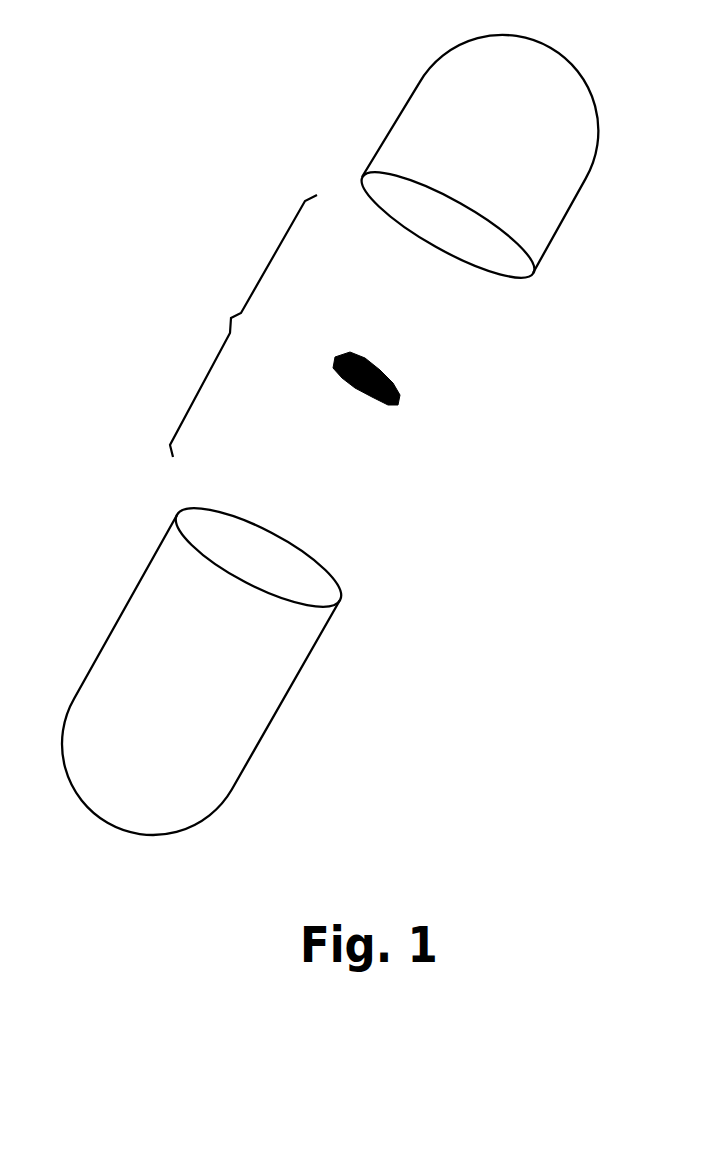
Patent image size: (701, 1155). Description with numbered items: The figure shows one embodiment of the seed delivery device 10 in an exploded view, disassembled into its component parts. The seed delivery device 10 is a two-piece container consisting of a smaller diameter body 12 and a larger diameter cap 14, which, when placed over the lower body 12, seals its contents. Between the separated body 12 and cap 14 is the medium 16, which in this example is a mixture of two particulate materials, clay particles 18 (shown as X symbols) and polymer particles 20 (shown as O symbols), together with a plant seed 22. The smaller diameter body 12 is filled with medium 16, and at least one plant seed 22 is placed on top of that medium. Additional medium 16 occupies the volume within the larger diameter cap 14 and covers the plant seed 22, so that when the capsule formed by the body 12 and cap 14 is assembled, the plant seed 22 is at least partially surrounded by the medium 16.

The seed delivery device 10 is at (137, 159).
The smaller diameter body 12 is at (198, 710).
The larger diameter cap 14 is at (460, 120).
The medium 16 is at (228, 322).
The clay particles 18 is at (500, 332).
The polymer particles 20 is at (390, 533).
The plant seed 22 is at (397, 398).